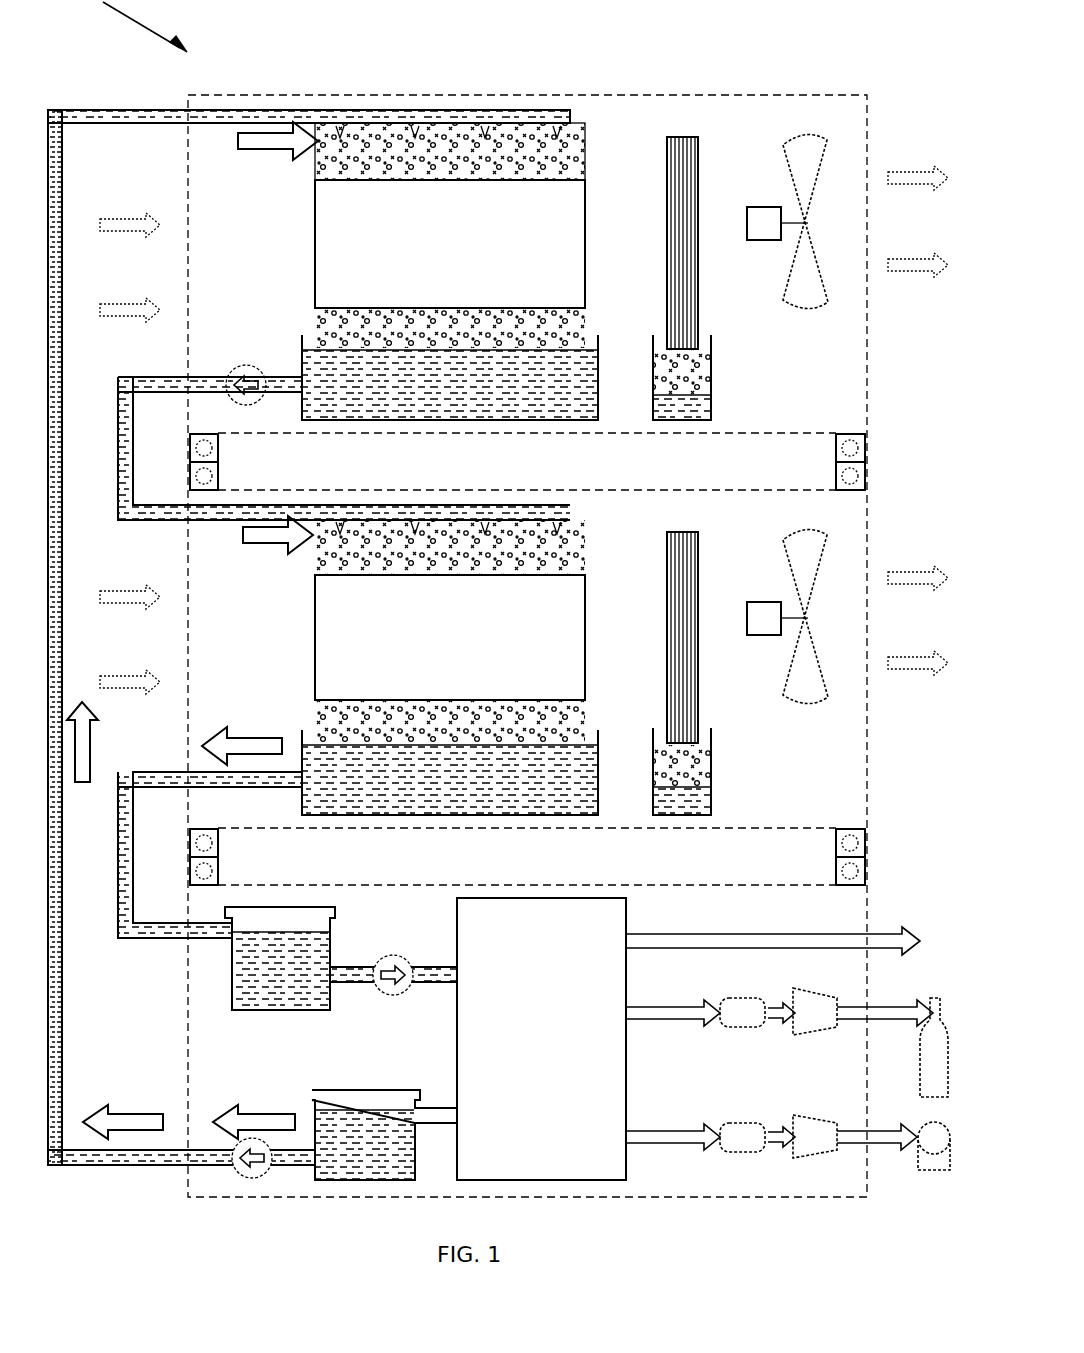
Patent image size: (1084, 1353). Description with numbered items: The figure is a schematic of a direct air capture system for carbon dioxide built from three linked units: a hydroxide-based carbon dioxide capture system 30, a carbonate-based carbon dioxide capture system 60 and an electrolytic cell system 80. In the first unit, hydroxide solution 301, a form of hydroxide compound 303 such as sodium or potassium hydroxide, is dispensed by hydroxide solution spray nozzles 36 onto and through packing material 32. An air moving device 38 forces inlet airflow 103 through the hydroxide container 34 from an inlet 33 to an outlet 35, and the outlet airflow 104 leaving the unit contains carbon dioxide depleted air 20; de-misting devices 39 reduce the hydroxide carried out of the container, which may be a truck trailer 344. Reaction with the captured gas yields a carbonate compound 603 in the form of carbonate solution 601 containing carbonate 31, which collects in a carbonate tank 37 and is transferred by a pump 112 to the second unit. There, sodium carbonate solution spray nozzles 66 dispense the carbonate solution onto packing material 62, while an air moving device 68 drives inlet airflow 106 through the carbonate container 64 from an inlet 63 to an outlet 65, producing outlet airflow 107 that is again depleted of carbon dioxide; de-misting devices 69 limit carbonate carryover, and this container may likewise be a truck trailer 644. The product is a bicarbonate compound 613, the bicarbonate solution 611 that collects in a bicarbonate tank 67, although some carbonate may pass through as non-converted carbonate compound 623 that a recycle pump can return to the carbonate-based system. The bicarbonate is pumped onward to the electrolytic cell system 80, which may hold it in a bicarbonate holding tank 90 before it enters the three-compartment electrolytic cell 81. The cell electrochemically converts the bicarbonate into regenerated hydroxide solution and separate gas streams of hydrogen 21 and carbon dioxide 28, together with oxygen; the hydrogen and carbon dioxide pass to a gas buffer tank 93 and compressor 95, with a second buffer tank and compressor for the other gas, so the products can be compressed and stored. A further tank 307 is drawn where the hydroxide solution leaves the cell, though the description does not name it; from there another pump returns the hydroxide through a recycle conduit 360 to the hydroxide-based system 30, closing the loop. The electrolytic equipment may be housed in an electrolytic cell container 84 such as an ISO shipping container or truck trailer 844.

The recycle conduit 360 is at (108, 118).
The hydroxide-based carbon dioxide capture system 30 is at (197, 220).
The hydroxide solution 301 is at (315, 150).
The hydroxide solution spray nozzles 36 is at (355, 125).
The hydroxide compound 303 is at (315, 180).
The packing material 32 is at (560, 215).
The carbonate solution 601 is at (312, 305).
The carbonate tank 37 is at (560, 352).
The carbonate 31 is at (292, 385).
The pump 112 is at (250, 368).
The de-misting devices 39 is at (688, 140).
The air moving device 38 is at (815, 165).
The outlet 35 is at (868, 155).
The carbon dioxide depleted air 20 is at (905, 178).
The outlet airflow 104 is at (895, 265).
The inlet airflow 103 is at (128, 225).
The inlet 33 is at (188, 270).
The hydroxide container 34 is at (830, 405).
The truck trailer 344 is at (860, 415).
The sodium carbonate solution spray nozzles 66 is at (335, 530).
The carbonate-based carbon dioxide capture system 60 is at (263, 593).
The carbonate compound 603 is at (420, 545).
The packing material 62 is at (570, 625).
The bicarbonate compound 613 is at (315, 700).
The non-converted carbonate compound 623 is at (535, 700).
The bicarbonate tank 67 is at (565, 745).
The bicarbonate solution 611 is at (315, 765).
The de-misting devices 69 is at (688, 610).
The air moving device 68 is at (810, 570).
The outlet 65 is at (868, 598).
The outlet airflow 107 is at (895, 663).
The inlet airflow 106 is at (128, 600).
The inlet 63 is at (188, 673).
The carbonate container 64 is at (830, 800).
The truck trailer 644 is at (840, 815).
The electrolytic cell system 80 is at (232, 1073).
The bicarbonate holding tank 90 is at (270, 940).
The three-compartment electrolytic cell 81 is at (585, 935).
The electrolytic cell container 84 is at (835, 930).
The truck trailer 844 is at (830, 945).
The hydrogen 21 is at (645, 1012).
The gas buffer tank 93 is at (740, 1012).
The compressor 95 is at (810, 1010).
The carbon dioxide 28 is at (655, 1138).
The return tank 307 is at (388, 1120).